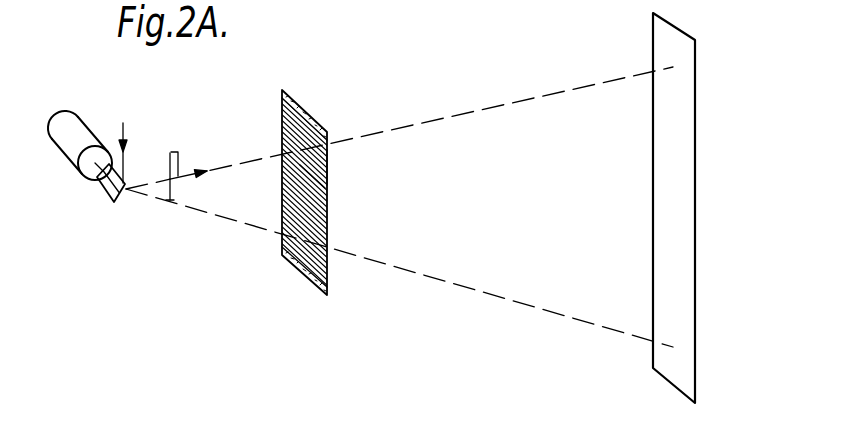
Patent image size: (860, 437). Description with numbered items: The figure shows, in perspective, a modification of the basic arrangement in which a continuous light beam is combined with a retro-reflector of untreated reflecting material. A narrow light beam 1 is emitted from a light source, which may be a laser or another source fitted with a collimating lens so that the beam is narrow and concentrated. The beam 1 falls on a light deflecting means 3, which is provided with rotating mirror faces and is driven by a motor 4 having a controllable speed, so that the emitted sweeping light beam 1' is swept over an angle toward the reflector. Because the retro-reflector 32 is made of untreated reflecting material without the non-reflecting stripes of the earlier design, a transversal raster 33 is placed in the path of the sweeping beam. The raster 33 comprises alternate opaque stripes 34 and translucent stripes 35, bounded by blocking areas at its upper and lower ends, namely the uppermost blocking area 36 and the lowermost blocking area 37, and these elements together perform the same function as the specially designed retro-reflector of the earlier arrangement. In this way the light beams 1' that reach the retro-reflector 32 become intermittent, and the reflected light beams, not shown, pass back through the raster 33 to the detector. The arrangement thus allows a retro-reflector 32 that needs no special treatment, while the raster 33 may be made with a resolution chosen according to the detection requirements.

The narrow light beam 1 is at (396, 207).
The sweeping light beam 1' is at (175, 163).
The light deflecting means 3 is at (107, 196).
The motor 4 is at (70, 160).
The retro-reflector 32 is at (683, 142).
The transversal raster 33 is at (272, 130).
The opaque stripes 34 is at (327, 167).
The translucent stripes 35 is at (315, 178).
The uppermost blocking area 36 is at (308, 112).
The lower edge of grating 37 is at (327, 291).